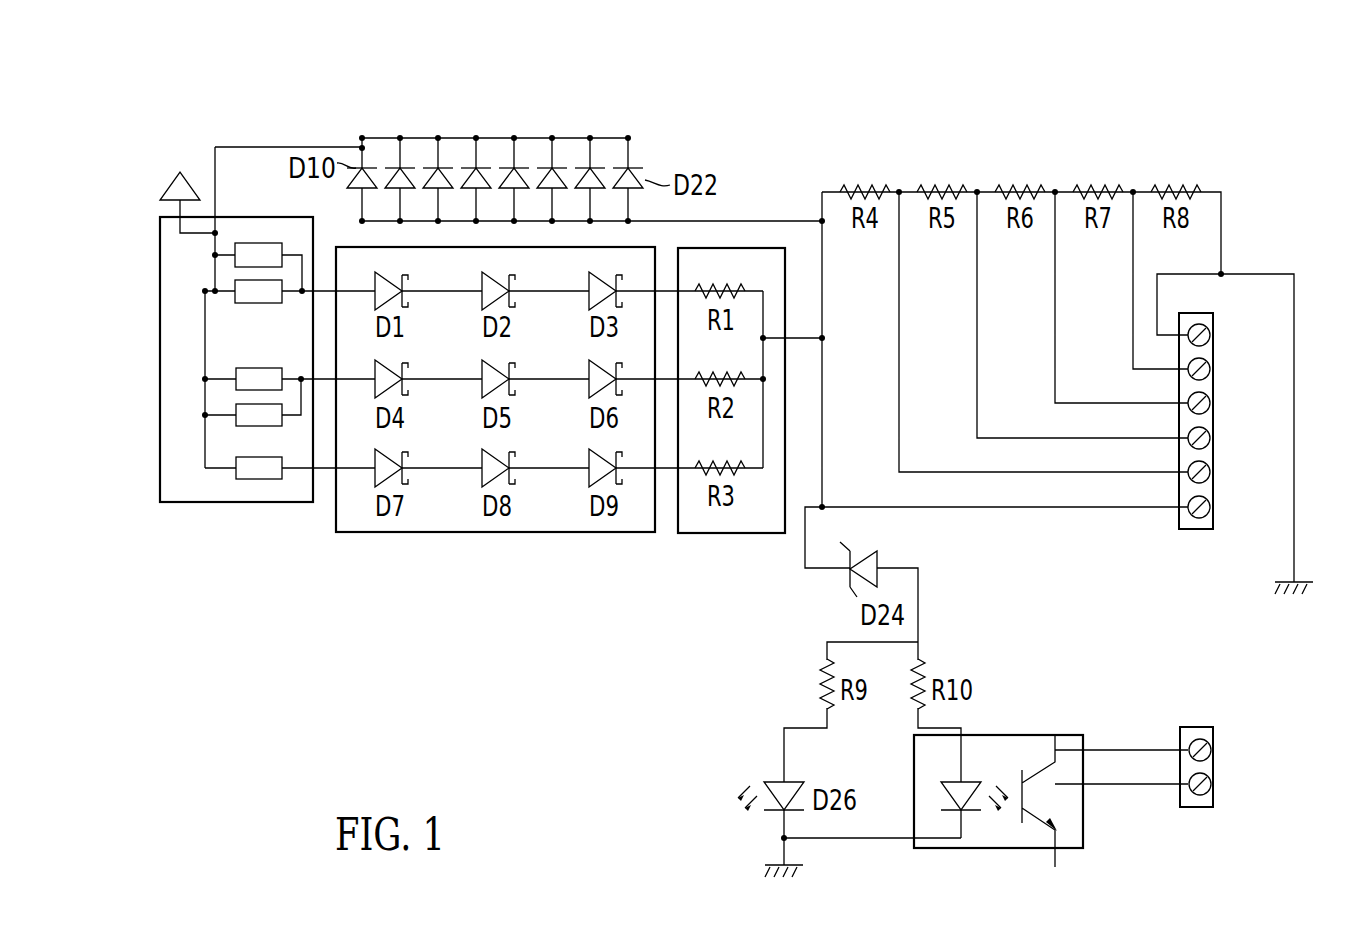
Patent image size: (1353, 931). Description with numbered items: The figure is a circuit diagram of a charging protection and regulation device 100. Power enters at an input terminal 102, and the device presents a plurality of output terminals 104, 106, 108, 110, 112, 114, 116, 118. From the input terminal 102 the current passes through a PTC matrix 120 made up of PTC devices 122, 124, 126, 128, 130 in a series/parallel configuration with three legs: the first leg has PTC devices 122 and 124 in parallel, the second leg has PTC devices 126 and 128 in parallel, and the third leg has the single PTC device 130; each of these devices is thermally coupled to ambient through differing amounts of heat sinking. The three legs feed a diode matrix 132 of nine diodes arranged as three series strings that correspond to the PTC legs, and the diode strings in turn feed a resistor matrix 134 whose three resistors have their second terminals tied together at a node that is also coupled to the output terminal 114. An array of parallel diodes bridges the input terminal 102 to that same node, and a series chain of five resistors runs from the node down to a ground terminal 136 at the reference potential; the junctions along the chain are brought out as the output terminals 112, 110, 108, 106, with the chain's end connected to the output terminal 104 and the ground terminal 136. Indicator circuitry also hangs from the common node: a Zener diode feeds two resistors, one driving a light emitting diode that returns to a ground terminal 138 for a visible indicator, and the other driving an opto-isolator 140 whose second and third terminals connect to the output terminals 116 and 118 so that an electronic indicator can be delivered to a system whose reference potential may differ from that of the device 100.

The charging protection and regulation device 100 is at (1236, 70).
The input terminal 102 is at (177, 188).
The output terminal 104 is at (1211, 335).
The output terminal 106 is at (1211, 369).
The output terminal 108 is at (1211, 403).
The output terminal 110 is at (1211, 438).
The output terminal 112 is at (1211, 472).
The output terminal 114 is at (1211, 507).
The output terminal 116 is at (1212, 750).
The output terminal 118 is at (1212, 784).
The PTC matrix 120 is at (245, 503).
The PTC device 122 is at (260, 243).
The PTC device 124 is at (258, 304).
The PTC device 126 is at (252, 368).
The PTC device 128 is at (258, 427).
The PTC device 130 is at (268, 480).
The diode matrix 132 is at (493, 534).
The resistor matrix 134 is at (727, 535).
The ground terminal 136 is at (1282, 581).
The ground terminal 138 is at (770, 863).
The opto-isolator 140 is at (995, 850).